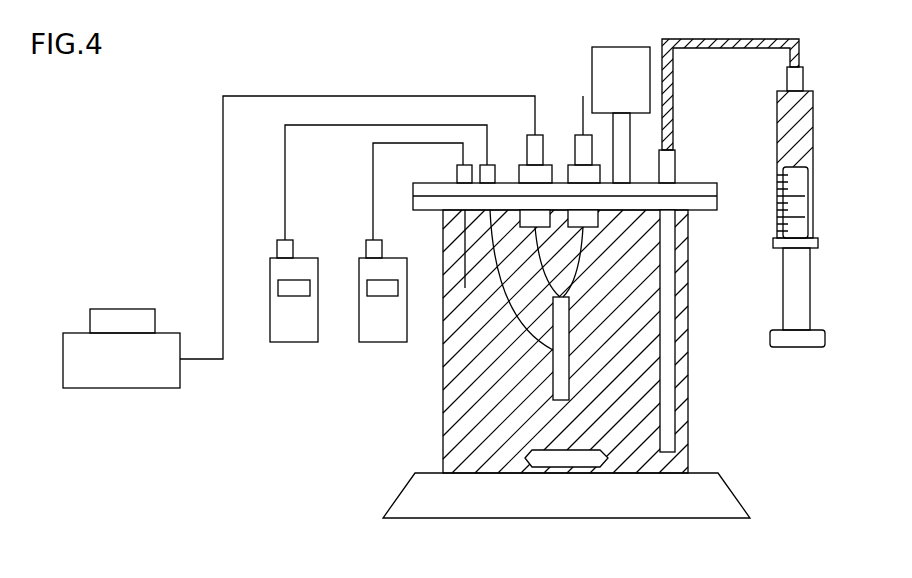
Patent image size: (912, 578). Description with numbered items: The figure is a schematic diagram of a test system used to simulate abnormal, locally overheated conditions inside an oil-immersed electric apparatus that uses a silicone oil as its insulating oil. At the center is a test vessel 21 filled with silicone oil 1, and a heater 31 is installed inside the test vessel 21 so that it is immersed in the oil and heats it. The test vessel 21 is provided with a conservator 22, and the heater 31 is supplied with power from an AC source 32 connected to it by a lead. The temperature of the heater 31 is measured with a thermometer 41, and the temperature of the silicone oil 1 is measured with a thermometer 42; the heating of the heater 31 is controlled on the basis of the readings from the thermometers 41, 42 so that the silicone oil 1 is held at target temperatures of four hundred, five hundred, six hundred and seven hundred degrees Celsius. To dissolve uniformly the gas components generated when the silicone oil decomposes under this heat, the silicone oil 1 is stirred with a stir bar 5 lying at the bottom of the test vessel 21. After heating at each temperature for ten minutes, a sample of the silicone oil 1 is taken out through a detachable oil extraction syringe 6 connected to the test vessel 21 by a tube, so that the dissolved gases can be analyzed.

The silicone oil 1 is at (453, 418).
The stir bar 5 is at (525, 452).
The detachable oil extraction syringe 6 is at (818, 103).
The test vessel 21 is at (724, 157).
The conservator 22 is at (600, 61).
The heater 31 is at (557, 361).
The AC source 32 is at (88, 388).
The thermometer 41 is at (295, 342).
The thermometer 42 is at (383, 342).